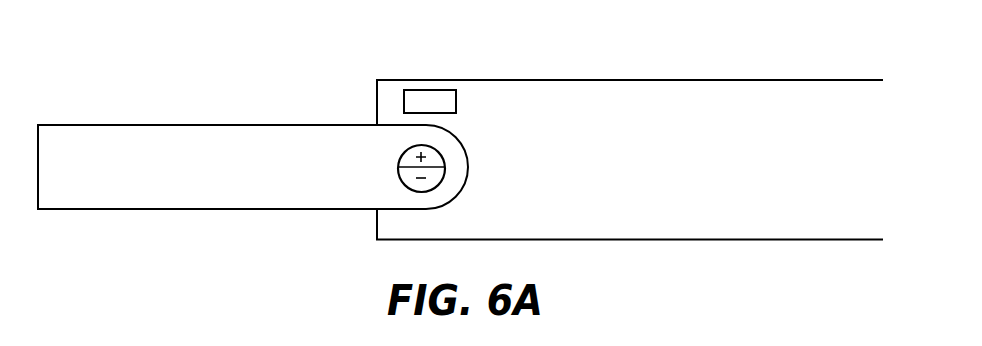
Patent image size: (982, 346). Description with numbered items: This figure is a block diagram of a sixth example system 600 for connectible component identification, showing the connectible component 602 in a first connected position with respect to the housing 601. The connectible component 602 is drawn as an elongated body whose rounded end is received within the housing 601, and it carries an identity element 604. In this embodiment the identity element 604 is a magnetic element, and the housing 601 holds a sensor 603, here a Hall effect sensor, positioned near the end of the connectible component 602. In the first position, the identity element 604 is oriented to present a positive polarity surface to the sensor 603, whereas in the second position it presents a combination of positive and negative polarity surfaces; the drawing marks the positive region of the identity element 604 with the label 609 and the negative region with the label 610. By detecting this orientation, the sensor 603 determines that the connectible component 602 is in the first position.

The sixth example system 600 is at (337, 46).
The housing 601 is at (515, 233).
The connectible component 602 is at (258, 130).
The sensor 603 is at (430, 90).
The identity element 604 is at (445, 151).
The positive terminal 609 is at (411, 156).
The negative terminal 610 is at (412, 178).